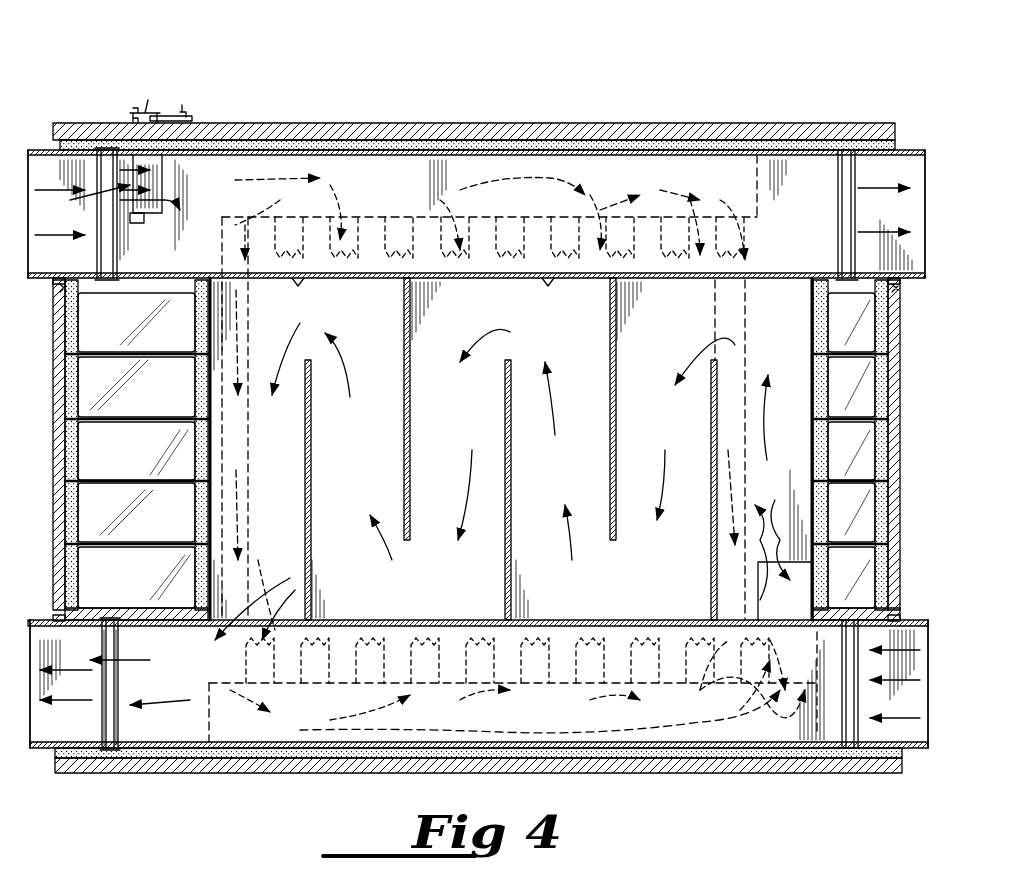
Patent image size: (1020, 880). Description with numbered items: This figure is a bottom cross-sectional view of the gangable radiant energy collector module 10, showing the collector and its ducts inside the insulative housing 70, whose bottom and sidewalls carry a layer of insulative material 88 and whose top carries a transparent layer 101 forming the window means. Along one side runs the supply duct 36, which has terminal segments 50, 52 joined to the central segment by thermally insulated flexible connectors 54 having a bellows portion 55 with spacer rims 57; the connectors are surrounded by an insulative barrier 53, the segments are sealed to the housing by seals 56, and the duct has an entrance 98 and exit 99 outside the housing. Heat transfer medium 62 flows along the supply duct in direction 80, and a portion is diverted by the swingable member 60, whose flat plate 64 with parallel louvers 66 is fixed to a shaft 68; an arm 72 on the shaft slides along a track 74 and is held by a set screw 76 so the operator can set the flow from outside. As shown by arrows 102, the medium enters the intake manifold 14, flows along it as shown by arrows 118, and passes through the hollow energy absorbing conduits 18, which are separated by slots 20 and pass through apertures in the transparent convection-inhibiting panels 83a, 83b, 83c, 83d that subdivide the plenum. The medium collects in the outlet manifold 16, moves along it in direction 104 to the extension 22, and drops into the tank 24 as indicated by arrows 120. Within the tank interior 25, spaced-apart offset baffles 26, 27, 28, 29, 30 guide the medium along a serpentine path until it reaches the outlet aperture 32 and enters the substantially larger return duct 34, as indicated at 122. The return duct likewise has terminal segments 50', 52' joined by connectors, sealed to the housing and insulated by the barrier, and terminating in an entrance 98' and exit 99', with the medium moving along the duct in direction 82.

The gangable radiant energy collector module 10 is at (527, 95).
The intake manifold 14 is at (757, 170).
The outlet manifold 16 is at (209, 700).
The energy absorbing conduits 18 is at (260, 215).
The slots 20 is at (424, 296).
The extension 22 is at (785, 591).
The tank 24 is at (180, 332).
The tank interior 25 is at (332, 437).
The baffle 26 is at (710, 405).
The baffle 27 is at (617, 437).
The baffle 28 is at (512, 467).
The baffle 29 is at (411, 438).
The baffle 30 is at (312, 438).
The outlet aperture 32 is at (255, 599).
The return duct 34 is at (258, 758).
The supply duct 36 is at (680, 152).
The terminal segment 50 is at (60, 215).
The terminal segment 50' is at (894, 684).
The terminal segment 52 is at (884, 203).
The terminal segment 52' is at (66, 703).
The insulative barrier 53 is at (92, 748).
The flexible connectors 54 is at (98, 150).
The bellows portion 55 is at (103, 155).
The seals 56 is at (900, 150).
The spacer rims 57 is at (838, 272).
The swingable member 60 is at (72, 200).
The heat transfer medium 62 is at (666, 477).
The plate 64 is at (140, 223).
The louvers 66 is at (162, 190).
The shaft 68 is at (136, 108).
The insulative housing 70 is at (612, 123).
The arm 72 is at (149, 105).
The track 74 is at (195, 118).
The set screw 76 is at (186, 108).
The flow direction 80 is at (846, 215).
The flow direction 82 is at (160, 700).
The convection-inhibiting panel 83a is at (845, 330).
The convection-inhibiting panel 83b is at (157, 415).
The convection-inhibiting panel 83c is at (479, 482).
The convection-inhibiting panel 83d is at (178, 540).
The insulative material 88 is at (395, 140).
The entrance 98 is at (34, 188).
The entrance 98' is at (922, 705).
The exit 99 is at (932, 234).
The exit 99' is at (45, 713).
The transparent layer 101 is at (479, 515).
The flow arrows 102 is at (165, 205).
The flow direction 104 is at (760, 705).
The flow arrows 118 is at (490, 219).
The flow arrows 120 is at (775, 537).
The flow indication 122 is at (235, 605).